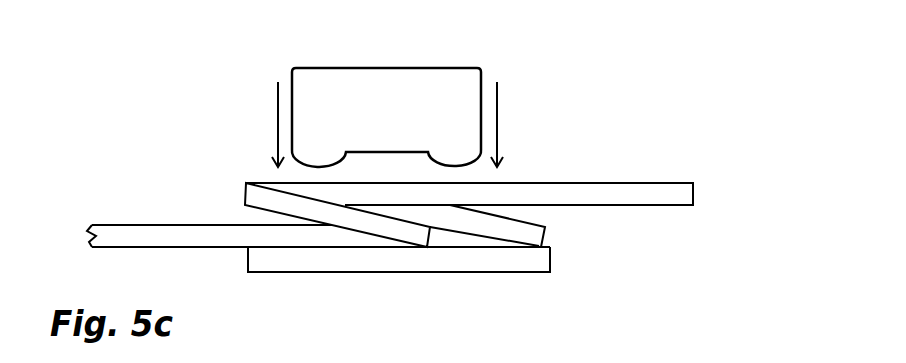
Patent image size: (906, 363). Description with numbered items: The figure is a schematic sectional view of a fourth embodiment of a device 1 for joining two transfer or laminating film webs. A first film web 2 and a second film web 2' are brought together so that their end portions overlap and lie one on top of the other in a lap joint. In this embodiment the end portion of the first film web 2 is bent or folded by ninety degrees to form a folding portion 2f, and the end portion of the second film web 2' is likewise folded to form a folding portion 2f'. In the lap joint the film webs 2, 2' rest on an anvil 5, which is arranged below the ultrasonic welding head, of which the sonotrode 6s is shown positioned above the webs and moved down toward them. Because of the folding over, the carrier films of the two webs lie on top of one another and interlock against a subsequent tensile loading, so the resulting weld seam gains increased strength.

The bag / package assembly 1 is at (607, 97).
The first film web 2 is at (486, 194).
The second film web 2' is at (288, 238).
The folding portion 2f is at (301, 215).
The folding portion 2f' is at (511, 231).
The anvil 5 is at (367, 262).
The sonotrode 6s is at (418, 82).